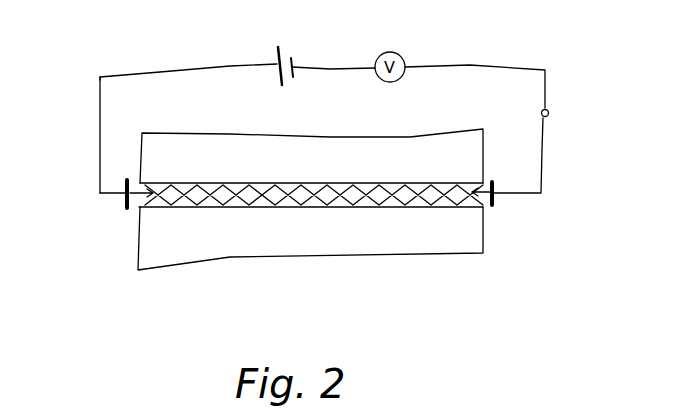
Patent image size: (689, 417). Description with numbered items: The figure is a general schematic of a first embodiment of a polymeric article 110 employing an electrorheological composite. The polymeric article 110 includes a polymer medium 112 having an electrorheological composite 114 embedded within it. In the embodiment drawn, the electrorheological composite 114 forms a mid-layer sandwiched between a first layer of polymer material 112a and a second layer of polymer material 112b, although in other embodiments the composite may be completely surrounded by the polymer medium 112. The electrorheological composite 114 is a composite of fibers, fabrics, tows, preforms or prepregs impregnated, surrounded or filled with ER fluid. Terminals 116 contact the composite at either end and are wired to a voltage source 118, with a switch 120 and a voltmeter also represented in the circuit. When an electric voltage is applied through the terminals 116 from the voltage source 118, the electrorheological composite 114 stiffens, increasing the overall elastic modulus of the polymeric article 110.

The polymeric article 110 is at (122, 35).
The polymer medium 112 is at (421, 134).
The first layer of polymer material 112a is at (188, 248).
The second layer of polymer material 112b is at (205, 140).
The electrorheological composite 114 is at (383, 212).
The terminals 116 is at (125, 208).
The voltage source 118 is at (290, 52).
The switch 120 is at (557, 132).